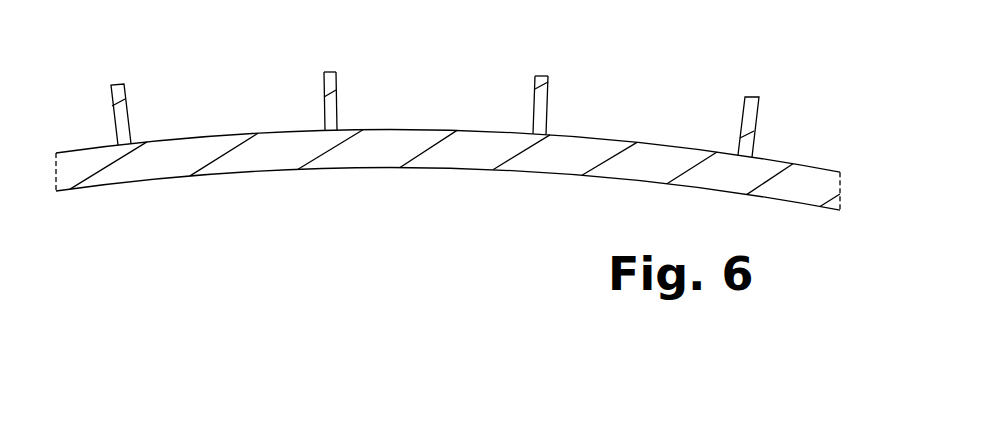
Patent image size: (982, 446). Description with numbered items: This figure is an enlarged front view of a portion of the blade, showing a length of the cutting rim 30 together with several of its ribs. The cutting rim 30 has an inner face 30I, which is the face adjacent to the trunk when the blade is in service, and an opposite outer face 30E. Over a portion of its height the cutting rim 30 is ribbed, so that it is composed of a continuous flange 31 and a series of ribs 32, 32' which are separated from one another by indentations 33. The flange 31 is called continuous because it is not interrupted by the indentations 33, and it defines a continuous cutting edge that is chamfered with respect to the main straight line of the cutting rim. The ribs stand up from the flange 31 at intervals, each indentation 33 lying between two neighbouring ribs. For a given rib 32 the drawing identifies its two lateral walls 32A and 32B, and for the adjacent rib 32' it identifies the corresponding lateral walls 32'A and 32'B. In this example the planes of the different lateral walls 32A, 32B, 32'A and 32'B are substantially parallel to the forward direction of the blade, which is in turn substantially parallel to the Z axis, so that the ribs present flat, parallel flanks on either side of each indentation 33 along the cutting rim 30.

The cutting rim 30 is at (461, 172).
The outer face 30E is at (810, 110).
The inner face 30I is at (267, 184).
The continuous flange 31 is at (647, 162).
The rib 32 is at (559, 129).
The lateral wall 32A is at (533, 107).
The lateral wall 32B is at (547, 97).
The rib 32' is at (365, 107).
The lateral wall 32'A is at (321, 65).
The lateral wall 32'B is at (384, 86).
The indentation 33 is at (200, 106).